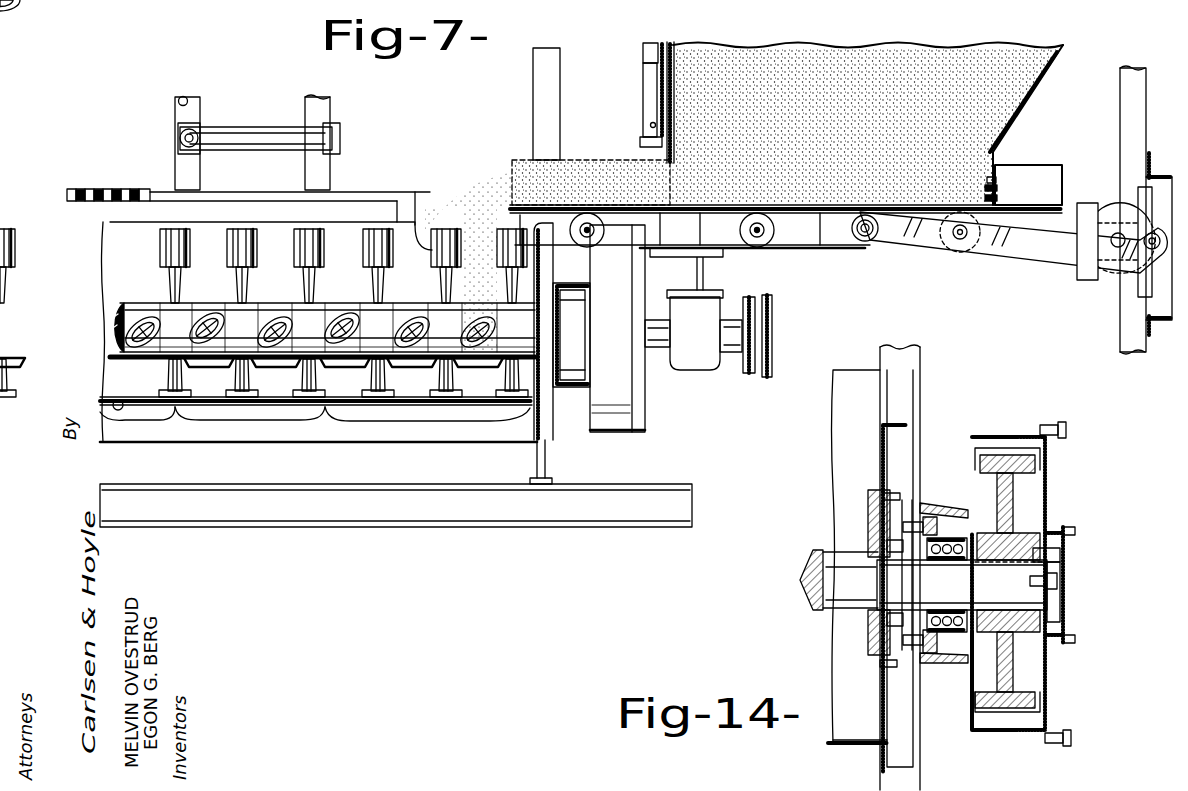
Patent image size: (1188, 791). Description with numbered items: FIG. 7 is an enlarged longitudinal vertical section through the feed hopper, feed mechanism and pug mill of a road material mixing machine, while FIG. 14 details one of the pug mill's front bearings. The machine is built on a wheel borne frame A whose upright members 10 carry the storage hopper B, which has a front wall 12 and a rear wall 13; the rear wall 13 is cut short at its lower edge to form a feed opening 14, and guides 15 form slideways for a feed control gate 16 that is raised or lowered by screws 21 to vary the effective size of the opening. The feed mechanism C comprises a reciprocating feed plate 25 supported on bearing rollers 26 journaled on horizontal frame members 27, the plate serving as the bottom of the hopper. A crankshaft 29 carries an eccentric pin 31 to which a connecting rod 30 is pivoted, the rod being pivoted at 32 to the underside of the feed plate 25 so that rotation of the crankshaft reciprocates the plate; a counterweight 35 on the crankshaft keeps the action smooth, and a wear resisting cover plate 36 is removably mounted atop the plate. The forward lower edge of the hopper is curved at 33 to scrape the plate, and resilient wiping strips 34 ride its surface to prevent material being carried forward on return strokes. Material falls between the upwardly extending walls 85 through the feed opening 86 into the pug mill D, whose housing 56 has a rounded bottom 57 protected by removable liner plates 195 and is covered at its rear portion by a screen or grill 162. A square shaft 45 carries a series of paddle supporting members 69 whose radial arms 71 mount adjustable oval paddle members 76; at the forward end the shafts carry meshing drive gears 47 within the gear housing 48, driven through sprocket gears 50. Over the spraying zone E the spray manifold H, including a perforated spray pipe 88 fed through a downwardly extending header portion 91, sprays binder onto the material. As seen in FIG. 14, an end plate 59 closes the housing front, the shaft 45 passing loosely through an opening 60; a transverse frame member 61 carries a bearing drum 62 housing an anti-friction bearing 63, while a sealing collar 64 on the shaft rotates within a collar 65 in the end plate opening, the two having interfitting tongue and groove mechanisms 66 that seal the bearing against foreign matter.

In FIG. 7, the upright members 10 is at (1138, 80).
In FIG. 7, the front wall 12 is at (1030, 95).
In FIG. 7, the rear wall 13 is at (672, 55).
In FIG. 7, the feed opening 14 is at (658, 78).
In FIG. 7, the guides 15 is at (653, 106).
In FIG. 7, the feed control gate 16 is at (643, 142).
In FIG. 7, the screws 21 is at (642, 57).
In FIG. 7, the feed plate 25 is at (712, 218).
In FIG. 7, the bearing rollers 26 is at (618, 246).
In FIG. 7, the horizontal frame members 27 is at (848, 250).
In FIG. 7, the crankshaft 29 is at (1117, 233).
In FIG. 7, the connecting rod 30 is at (1040, 262).
In FIG. 7, the eccentric pin 31 is at (1160, 178).
In FIG. 7, the pivot 32 is at (882, 244).
In FIG. 7, the curved forward lower edge 33 is at (992, 178).
In FIG. 7, the wiping strips 34 is at (1002, 190).
In FIG. 7, the counterweight 35 is at (1078, 279).
In FIG. 7, the cover plate 36 is at (1051, 200).
In FIG. 14, the shaft 45 is at (799, 580).
In FIG. 14, the drive gears 47 is at (983, 455).
In FIG. 7, the gear housing 48 is at (616, 438).
In FIG. 14, the gear housing 48 is at (1029, 440).
In FIG. 7, the sprocket gears 50 is at (761, 378).
In FIG. 7, the pug mill housing 56 is at (123, 398).
In FIG. 7, the rounded bottom 57 is at (342, 444).
In FIG. 14, the rounded bottom 57 is at (856, 751).
In FIG. 7, the end plate 59 is at (530, 446).
In FIG. 14, the end plate 59 is at (891, 433).
In FIG. 14, the openings 60 is at (893, 493).
In FIG. 14, the transverse frame member 61 is at (962, 511).
In FIG. 14, the bearing drums 62 is at (956, 643).
In FIG. 14, the anti-friction bearings 63 is at (984, 560).
In FIG. 14, the sealing collars 64 is at (915, 570).
In FIG. 14, the collars 65 is at (899, 516).
In FIG. 14, the tongue and groove mechanisms 66 is at (954, 560).
In FIG. 7, the paddle supporting members 69 is at (220, 351).
In FIG. 7, the arms 71 is at (232, 285).
In FIG. 7, the paddle members 76 is at (231, 246).
In FIG. 7, the upwardly extending walls 85 is at (446, 170).
In FIG. 7, the feed opening 86 is at (440, 203).
In FIG. 7, the spray pipe 88 is at (253, 149).
In FIG. 7, the downwardly extending portion 91 is at (182, 160).
In FIG. 7, the screen or grill 162 is at (95, 202).
In FIG. 7, the liner plates 195 is at (102, 398).
In FIG. 14, the liner plates 195 is at (868, 742).
In FIG. 7, the frame A is at (583, 530).
In FIG. 7, the hopper B is at (1065, 47).
In FIG. 7, the feed mechanism C is at (1063, 170).
In FIG. 7, the pug mill D is at (165, 187).
In FIG. 7, the spraying zone E is at (315, 424).
In FIG. 7, the spray manifold H is at (255, 120).